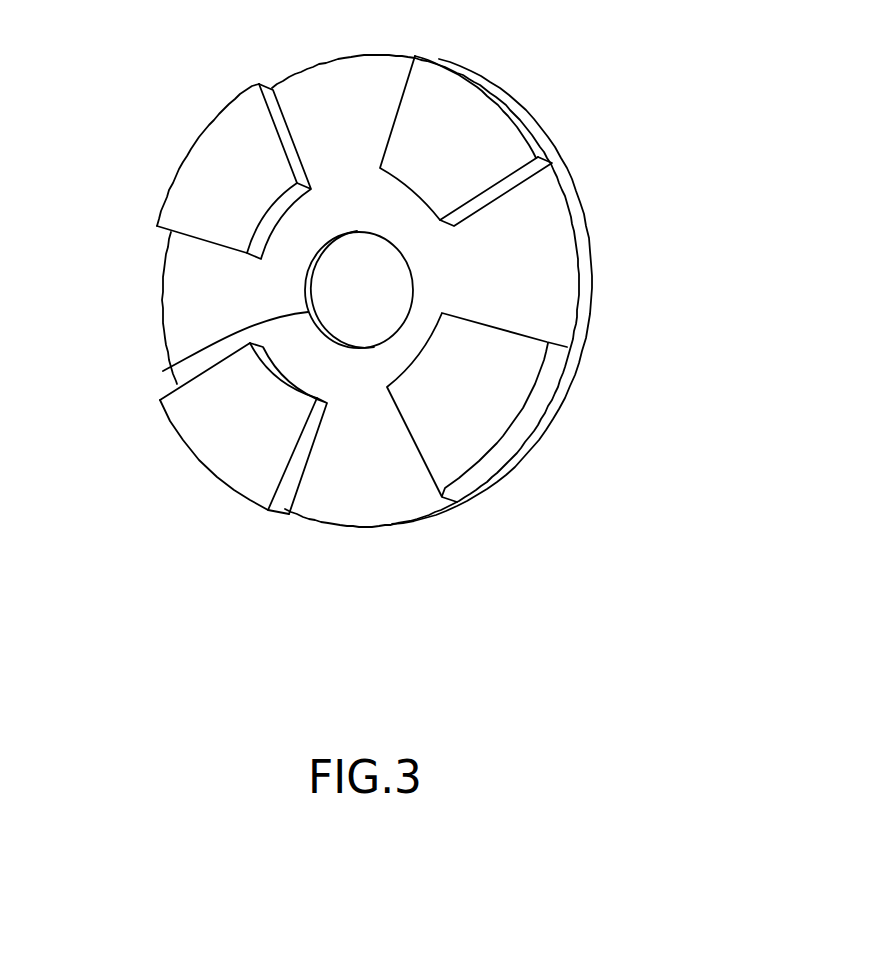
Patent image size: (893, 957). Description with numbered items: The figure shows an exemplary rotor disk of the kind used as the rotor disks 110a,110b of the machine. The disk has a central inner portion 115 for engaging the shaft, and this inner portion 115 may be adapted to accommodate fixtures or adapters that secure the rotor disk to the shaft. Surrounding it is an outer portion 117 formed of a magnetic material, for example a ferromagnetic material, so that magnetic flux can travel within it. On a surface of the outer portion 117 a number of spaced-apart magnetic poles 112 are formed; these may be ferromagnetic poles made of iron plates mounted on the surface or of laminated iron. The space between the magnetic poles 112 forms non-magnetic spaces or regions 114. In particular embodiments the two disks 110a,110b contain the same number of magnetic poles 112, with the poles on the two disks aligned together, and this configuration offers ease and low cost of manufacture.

The rotor disks 110a,110b is at (540, 473).
The magnetic poles 112 is at (475, 103).
The non-magnetic spaces or regions 114 is at (530, 281).
The inner portion 115 is at (163, 371).
The outer portion 117 is at (190, 274).